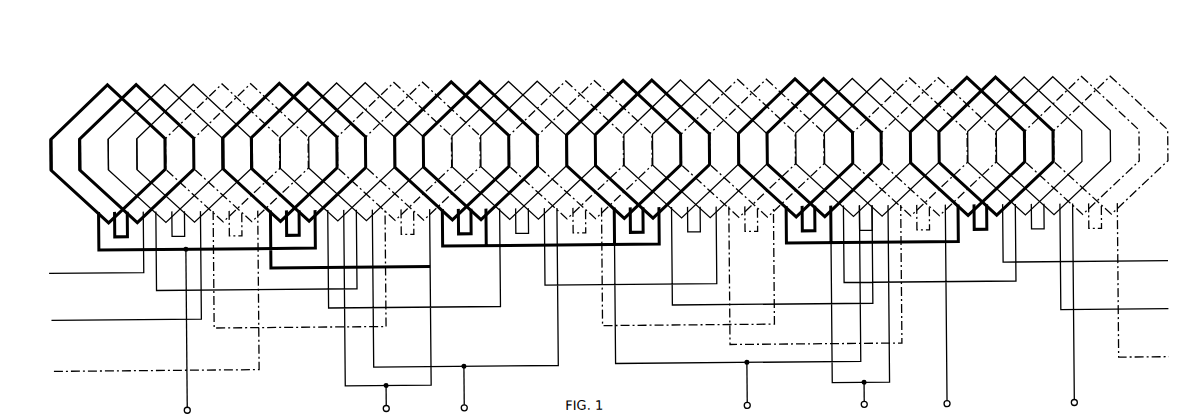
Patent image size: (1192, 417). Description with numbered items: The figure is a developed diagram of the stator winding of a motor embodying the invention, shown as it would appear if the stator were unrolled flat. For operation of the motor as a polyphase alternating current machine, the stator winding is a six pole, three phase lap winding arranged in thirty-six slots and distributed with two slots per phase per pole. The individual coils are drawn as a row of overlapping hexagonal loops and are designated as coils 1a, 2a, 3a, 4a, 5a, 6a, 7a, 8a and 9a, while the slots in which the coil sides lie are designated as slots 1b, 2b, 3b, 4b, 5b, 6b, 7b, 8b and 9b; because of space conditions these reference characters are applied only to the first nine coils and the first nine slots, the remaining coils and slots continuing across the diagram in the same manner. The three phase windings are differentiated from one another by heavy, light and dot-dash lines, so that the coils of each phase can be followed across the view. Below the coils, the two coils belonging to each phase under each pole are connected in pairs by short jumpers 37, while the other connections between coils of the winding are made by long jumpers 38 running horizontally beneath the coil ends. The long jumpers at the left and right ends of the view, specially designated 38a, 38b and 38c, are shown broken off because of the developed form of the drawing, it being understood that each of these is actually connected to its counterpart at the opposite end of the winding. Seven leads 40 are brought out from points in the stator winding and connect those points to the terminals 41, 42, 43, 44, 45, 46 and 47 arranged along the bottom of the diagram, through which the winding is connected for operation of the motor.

The coil 1a is at (107, 144).
The coil 2a is at (136, 144).
The coil 3a is at (165, 144).
The coil 4a is at (193, 144).
The coil 5a is at (222, 143).
The coil 6a is at (250, 143).
The coil 7a is at (279, 143).
The coil 8a is at (308, 143).
The coil 9a is at (336, 142).
The slot 1b is at (46, 167).
The slot 2b is at (75, 167).
The slot 3b is at (104, 167).
The slot 4b is at (133, 167).
The slot 5b is at (163, 166).
The slot 6b is at (192, 166).
The slot 7b is at (221, 166).
The slot 8b is at (250, 166).
The slot 9b is at (279, 165).
The short jumper 37 is at (123, 234).
The long jumper 38 is at (96, 236).
The long jumper 38a is at (72, 272).
The long jumper 38b is at (72, 320).
The long jumper 38c is at (72, 371).
The lead 40 is at (188, 357).
The terminal 41 is at (189, 411).
The terminal 42 is at (749, 411).
The terminal 43 is at (866, 411).
The terminal 44 is at (466, 411).
The terminal 45 is at (388, 411).
The terminal 46 is at (948, 411).
The terminal 47 is at (1076, 411).